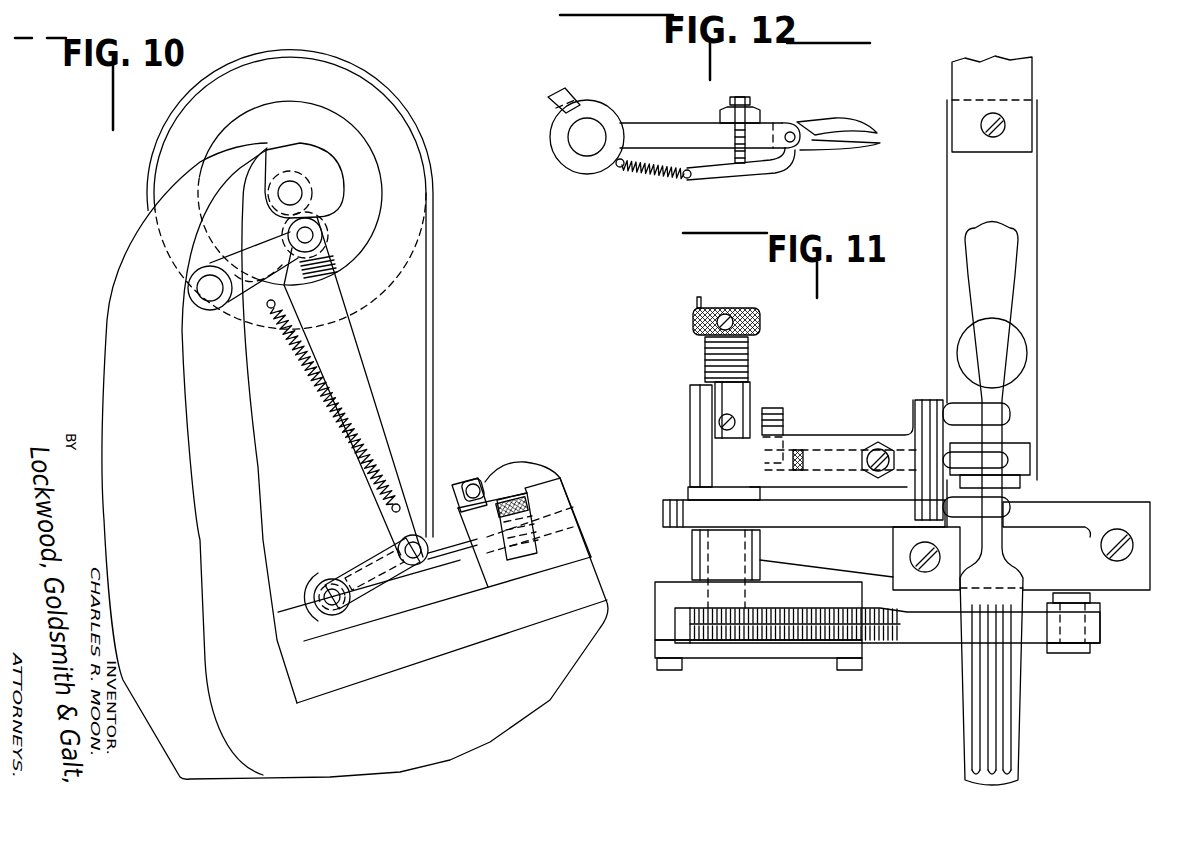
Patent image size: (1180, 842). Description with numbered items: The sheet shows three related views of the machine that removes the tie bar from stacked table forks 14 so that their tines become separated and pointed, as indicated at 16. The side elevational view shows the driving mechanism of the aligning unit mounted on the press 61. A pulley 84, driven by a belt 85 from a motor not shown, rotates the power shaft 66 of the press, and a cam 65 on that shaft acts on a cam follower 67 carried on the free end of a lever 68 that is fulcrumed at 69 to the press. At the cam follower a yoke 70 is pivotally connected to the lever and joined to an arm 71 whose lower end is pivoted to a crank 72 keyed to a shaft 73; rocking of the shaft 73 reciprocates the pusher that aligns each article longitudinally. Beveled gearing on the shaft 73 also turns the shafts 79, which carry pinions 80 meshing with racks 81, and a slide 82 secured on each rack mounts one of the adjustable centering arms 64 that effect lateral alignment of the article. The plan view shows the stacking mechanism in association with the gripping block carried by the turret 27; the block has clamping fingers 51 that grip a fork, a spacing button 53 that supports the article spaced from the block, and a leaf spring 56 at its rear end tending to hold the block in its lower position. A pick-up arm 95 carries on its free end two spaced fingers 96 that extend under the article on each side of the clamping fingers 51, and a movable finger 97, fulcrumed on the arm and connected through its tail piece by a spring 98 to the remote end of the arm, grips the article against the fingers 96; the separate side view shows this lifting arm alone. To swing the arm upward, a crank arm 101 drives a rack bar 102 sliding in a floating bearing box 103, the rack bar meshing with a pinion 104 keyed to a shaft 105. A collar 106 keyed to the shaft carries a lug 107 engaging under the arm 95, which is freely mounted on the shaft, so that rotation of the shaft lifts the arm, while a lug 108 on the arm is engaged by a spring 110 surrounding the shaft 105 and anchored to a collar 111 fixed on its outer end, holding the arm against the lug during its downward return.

In FIG. 10, the press 61 is at (210, 543).
In FIG. 10, the adjustable centering arms 64 is at (455, 483).
In FIG. 10, the cam 65 is at (307, 147).
In FIG. 10, the shaft 66 is at (297, 193).
In FIG. 10, the cam follower 67 is at (317, 240).
In FIG. 10, the lever 68 is at (240, 253).
In FIG. 10, the fulcrum 69 is at (214, 310).
In FIG. 10, the yoke 70 is at (335, 261).
In FIG. 10, the arm 71 is at (363, 387).
In FIG. 10, the crank 72 is at (370, 553).
In FIG. 10, the shaft 73 is at (332, 605).
In FIG. 10, the shafts 79 is at (463, 553).
In FIG. 10, the pinions 80 is at (530, 560).
In FIG. 10, the racks 81 is at (543, 492).
In FIG. 10, the slide 82 is at (512, 473).
In FIG. 10, the pulley 84 is at (413, 180).
In FIG. 10, the belt 85 is at (427, 307).
In FIG. 11, the table forks 14 is at (977, 298).
In FIG. 11, the separated and pointed tines 16 is at (975, 750).
In FIG. 11, the turret 27 is at (1027, 295).
In FIG. 11, the clamping fingers 51 is at (1023, 450).
In FIG. 11, the spacing button 53 is at (1020, 355).
In FIG. 11, the leaf spring 56 is at (1023, 87).
In FIG. 12, the pick-up arm 95 is at (672, 130).
In FIG. 11, the pick-up arm 95 is at (895, 435).
In FIG. 12, the spaced fingers 96 is at (828, 150).
In FIG. 11, the spaced fingers 96 is at (1013, 413).
In FIG. 12, the movable finger 97 is at (827, 127).
In FIG. 11, the movable finger 97 is at (1012, 460).
In FIG. 12, the spring 98 is at (647, 176).
In FIG. 11, the crank arm 101 is at (1100, 612).
In FIG. 11, the rack bar 102 is at (883, 645).
In FIG. 11, the floating bearing box 103 is at (660, 632).
In FIG. 11, the pinion 104 is at (687, 650).
In FIG. 11, the shaft 105 is at (700, 562).
In FIG. 11, the collar 106 is at (747, 418).
In FIG. 11, the lug 107 is at (785, 420).
In FIG. 12, the lug 108 is at (567, 90).
In FIG. 11, the lug 108 is at (693, 402).
In FIG. 11, the spring 110 is at (752, 357).
In FIG. 11, the collar 111 is at (762, 323).